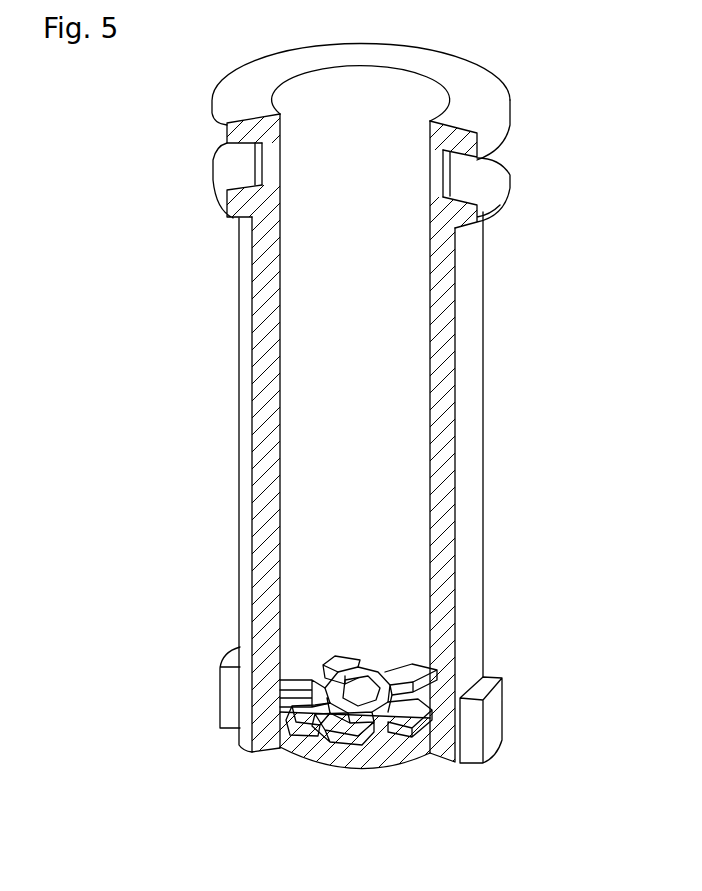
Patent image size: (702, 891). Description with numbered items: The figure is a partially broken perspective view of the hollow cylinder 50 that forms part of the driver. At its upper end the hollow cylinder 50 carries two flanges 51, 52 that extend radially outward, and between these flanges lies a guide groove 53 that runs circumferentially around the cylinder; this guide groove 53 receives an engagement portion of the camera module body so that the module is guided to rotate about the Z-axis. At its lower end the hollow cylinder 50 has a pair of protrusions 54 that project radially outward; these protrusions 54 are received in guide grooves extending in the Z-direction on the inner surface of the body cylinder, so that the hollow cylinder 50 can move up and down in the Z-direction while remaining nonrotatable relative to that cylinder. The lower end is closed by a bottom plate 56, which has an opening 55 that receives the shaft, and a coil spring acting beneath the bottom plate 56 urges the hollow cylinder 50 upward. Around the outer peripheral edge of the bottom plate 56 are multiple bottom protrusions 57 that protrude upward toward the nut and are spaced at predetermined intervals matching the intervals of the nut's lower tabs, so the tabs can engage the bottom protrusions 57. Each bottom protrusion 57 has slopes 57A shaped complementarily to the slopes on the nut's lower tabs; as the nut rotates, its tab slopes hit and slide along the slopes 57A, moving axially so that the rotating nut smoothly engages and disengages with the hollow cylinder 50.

The hollow cylinder 50 is at (172, 373).
The flange 51 is at (505, 121).
The flange 52 is at (512, 182).
The guide groove 53 is at (522, 157).
The protrusions 54 is at (222, 692).
The opening 55 is at (363, 700).
The bottom plate 56 is at (385, 765).
The bottom protrusions 57 is at (303, 680).
The slopes 57A is at (318, 662).